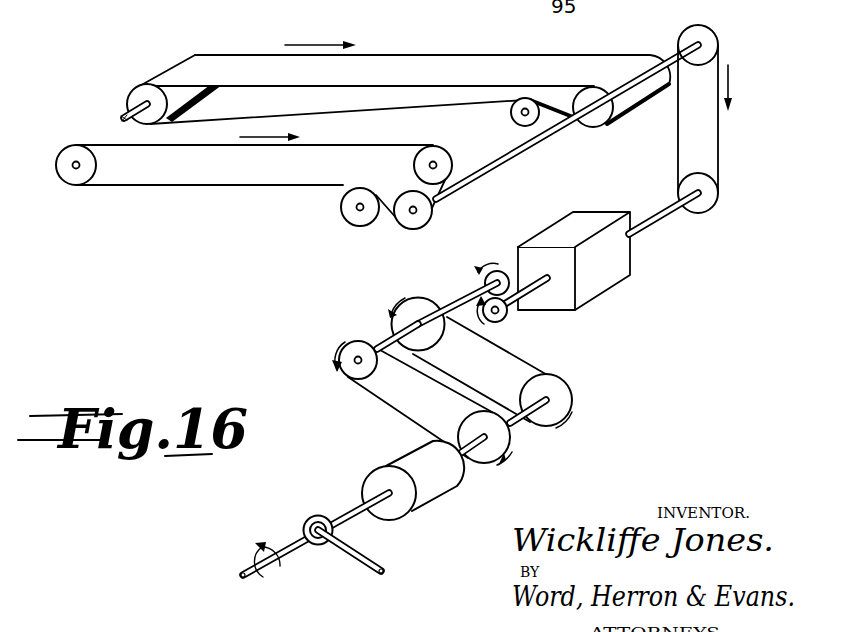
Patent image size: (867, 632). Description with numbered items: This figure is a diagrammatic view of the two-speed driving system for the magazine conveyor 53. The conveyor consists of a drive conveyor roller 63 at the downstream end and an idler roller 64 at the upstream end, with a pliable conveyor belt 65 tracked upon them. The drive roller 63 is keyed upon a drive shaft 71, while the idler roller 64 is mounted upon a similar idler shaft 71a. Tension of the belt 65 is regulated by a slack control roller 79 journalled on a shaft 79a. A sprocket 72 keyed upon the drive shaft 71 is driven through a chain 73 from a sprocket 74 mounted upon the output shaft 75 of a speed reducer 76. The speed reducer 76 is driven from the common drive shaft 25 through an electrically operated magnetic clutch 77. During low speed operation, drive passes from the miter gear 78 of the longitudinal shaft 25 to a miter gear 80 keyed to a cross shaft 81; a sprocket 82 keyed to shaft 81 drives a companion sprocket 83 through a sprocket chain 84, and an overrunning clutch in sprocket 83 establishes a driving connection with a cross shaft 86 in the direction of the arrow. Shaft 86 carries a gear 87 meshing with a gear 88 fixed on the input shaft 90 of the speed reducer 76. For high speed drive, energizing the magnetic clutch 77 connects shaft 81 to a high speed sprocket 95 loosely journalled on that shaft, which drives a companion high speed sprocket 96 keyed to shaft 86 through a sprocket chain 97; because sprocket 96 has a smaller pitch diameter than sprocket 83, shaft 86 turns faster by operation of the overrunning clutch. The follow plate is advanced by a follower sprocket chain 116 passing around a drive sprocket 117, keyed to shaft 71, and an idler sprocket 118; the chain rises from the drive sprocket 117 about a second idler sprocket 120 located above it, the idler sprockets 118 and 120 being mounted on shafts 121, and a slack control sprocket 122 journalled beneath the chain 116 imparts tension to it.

The common drive shaft 25 is at (356, 554).
The magazine conveyor 53 is at (370, 65).
The drive conveyor roller 63 is at (600, 120).
The idler roller 64 is at (176, 92).
The conveyor belt 65 is at (415, 66).
The drive shaft 71 is at (536, 142).
The idler shaft 71a is at (130, 108).
The sprocket 72 is at (700, 36).
The chain 73 is at (722, 128).
The sprocket 74 is at (718, 196).
The output shaft 75 is at (650, 224).
The speed reducer 76 is at (622, 268).
The magnetic clutch 77 is at (410, 462).
The miter gear 78 is at (322, 545).
The slack control roller 79 is at (517, 119).
The shaft 79a is at (535, 76).
The miter gear 80 is at (318, 522).
The cross shaft 81 is at (468, 456).
The sprocket 82 is at (572, 396).
The sprocket 83 is at (426, 306).
The sprocket chain 84 is at (527, 358).
The cross shaft 86 is at (468, 292).
The gear 87 is at (500, 272).
The gear 88 is at (508, 316).
The input shaft 90 is at (535, 288).
The high speed sprocket 95 is at (510, 438).
The high speed sprocket 96 is at (360, 350).
The sprocket chain 97 is at (380, 400).
The follower sprocket chain 116 is at (250, 190).
The drive sprocket 117 is at (408, 222).
The idler sprocket 118 is at (92, 165).
The second idler sprocket 120 is at (425, 162).
The shafts 121 is at (75, 168).
The slack control sprocket 122 is at (355, 216).